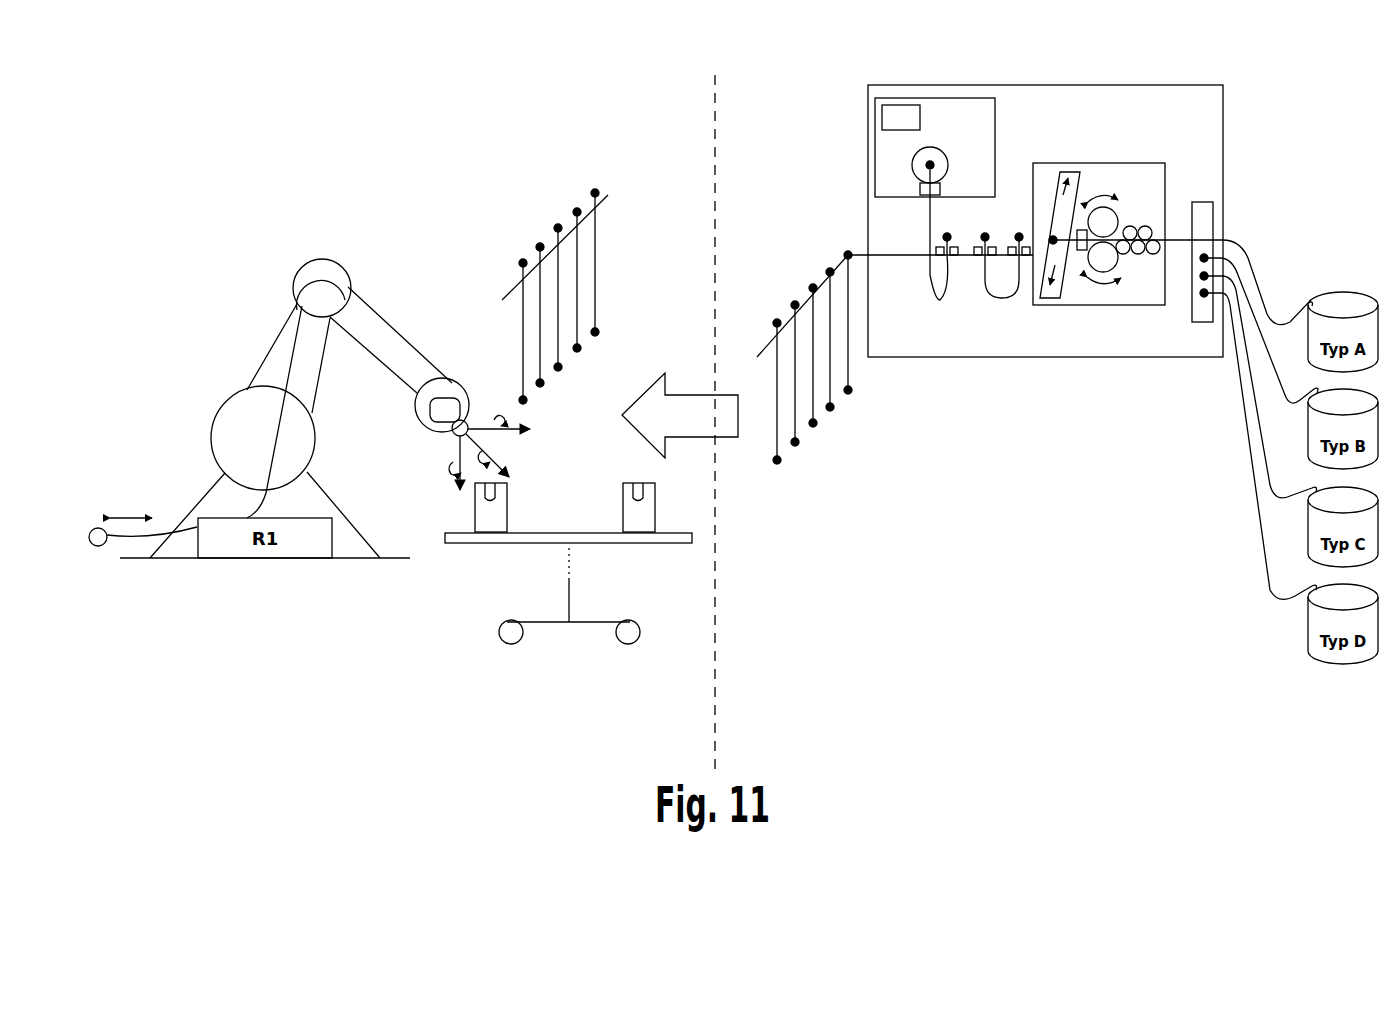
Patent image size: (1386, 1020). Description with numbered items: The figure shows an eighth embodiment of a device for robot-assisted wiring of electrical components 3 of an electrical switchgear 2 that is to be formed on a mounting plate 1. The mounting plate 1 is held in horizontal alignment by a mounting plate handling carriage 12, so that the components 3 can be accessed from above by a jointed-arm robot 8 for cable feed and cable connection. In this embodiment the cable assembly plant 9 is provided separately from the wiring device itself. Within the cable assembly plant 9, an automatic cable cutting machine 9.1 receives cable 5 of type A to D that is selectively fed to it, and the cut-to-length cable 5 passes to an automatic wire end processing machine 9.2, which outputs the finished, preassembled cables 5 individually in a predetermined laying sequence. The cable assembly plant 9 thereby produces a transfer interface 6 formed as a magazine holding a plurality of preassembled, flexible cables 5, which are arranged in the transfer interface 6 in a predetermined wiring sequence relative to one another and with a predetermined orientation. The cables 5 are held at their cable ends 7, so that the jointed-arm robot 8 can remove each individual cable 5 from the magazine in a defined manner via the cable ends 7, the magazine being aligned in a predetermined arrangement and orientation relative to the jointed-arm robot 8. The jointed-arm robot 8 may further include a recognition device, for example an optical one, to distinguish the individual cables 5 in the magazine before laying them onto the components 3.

The mounting plate 1 is at (678, 538).
The electrical switchgear 2 is at (600, 478).
The electrical components 3 is at (490, 512).
The cables 5 is at (288, 347).
The transfer interface 6 is at (502, 300).
The cable ends 7 is at (98, 546).
The jointed-arm robot 8 is at (318, 280).
The cable assembly plant 9 is at (1224, 151).
The automatic cable cutting machine 9.1 is at (1102, 177).
The automatic wire end processing machine 9.2 is at (937, 110).
The mounting plate handling carriage 12 is at (569, 595).